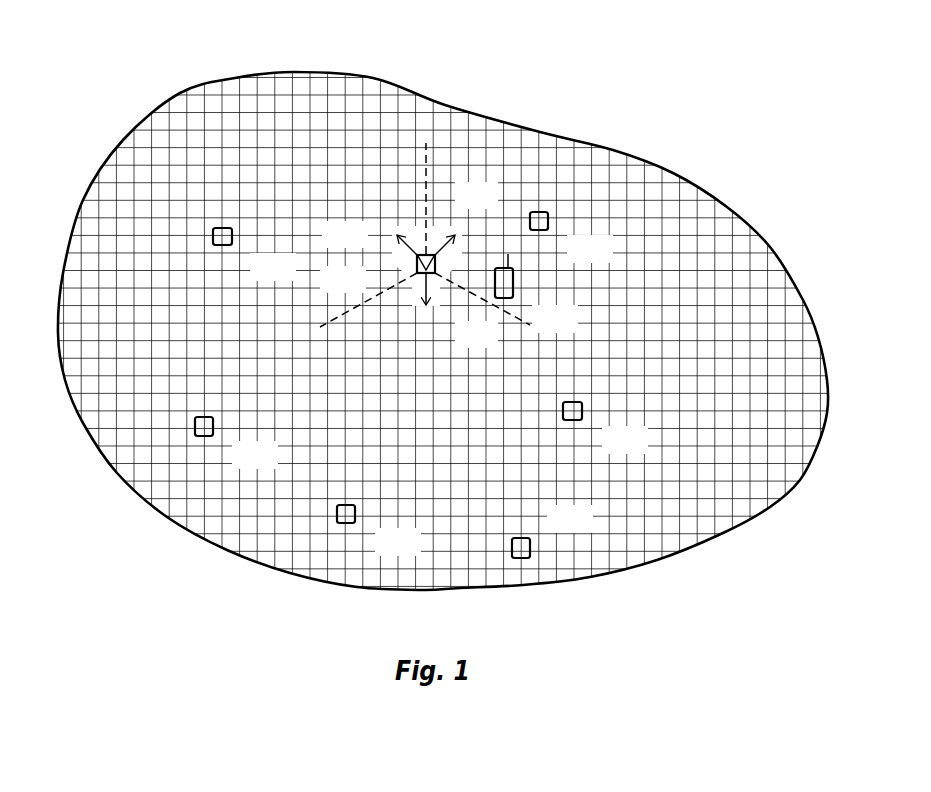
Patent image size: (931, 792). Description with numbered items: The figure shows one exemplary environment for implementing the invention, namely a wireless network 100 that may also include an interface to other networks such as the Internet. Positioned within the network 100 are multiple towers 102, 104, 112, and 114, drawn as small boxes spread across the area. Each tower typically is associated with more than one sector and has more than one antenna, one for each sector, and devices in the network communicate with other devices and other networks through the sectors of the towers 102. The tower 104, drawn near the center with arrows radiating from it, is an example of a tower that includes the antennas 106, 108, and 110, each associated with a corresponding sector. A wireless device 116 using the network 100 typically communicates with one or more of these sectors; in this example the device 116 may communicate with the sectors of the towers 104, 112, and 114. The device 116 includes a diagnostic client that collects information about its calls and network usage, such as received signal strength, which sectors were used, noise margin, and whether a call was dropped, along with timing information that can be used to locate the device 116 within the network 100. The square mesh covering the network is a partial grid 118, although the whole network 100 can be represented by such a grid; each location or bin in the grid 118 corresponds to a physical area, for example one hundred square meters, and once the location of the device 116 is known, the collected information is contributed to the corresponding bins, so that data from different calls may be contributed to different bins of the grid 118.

The wireless network 100 is at (377, 80).
The tower 102 is at (228, 245).
The tower 104 is at (415, 266).
The antenna 106 is at (432, 295).
The antenna 108 is at (455, 236).
The antenna 110 is at (397, 247).
The tower 112 is at (542, 230).
The tower 114 is at (577, 420).
The wireless device 116 is at (508, 298).
The partial grid 118 is at (670, 520).